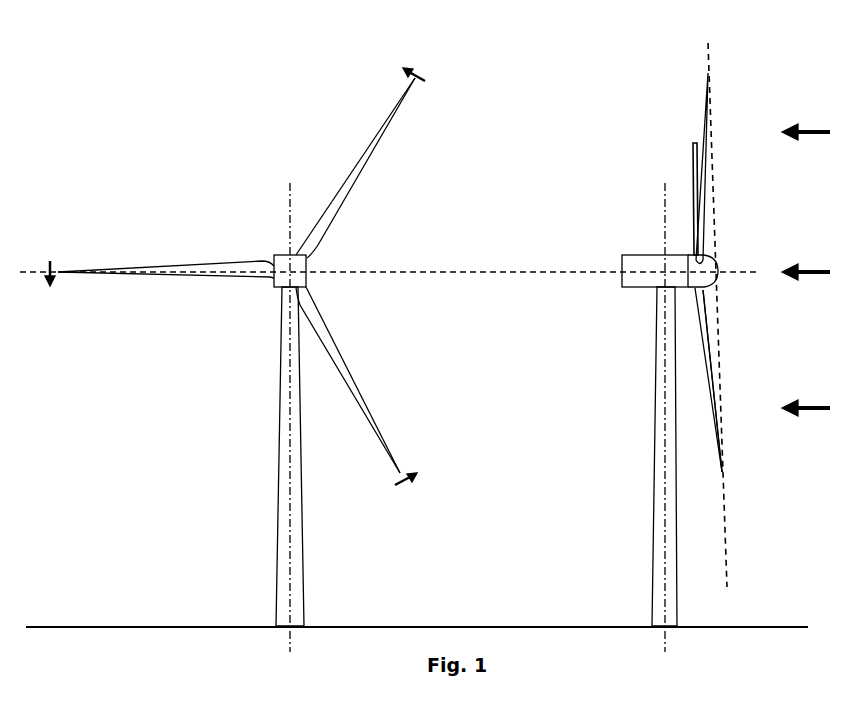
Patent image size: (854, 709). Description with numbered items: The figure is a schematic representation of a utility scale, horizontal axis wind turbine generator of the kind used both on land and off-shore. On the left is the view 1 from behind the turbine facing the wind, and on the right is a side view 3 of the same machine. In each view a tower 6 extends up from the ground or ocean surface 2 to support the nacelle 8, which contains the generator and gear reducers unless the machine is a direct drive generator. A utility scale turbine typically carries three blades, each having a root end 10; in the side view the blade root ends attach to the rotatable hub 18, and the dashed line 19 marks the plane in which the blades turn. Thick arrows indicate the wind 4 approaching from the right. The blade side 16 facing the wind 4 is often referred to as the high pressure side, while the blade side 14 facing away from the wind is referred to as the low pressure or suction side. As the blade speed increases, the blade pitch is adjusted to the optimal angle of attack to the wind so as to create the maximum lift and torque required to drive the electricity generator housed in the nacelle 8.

The view from behind the turbine 1 is at (210, 162).
The ground or ocean surface 2 is at (165, 625).
The wind turbine with tilted rotor 3 is at (604, 172).
The wind 4 is at (820, 135).
The tower 6 is at (283, 443).
The nacelle 8 is at (281, 260).
The root ends 10 is at (273, 277).
The blade side facing away from the wind 14 is at (330, 348).
The blade side facing the wind 16 is at (710, 345).
The rotatable hub 18 is at (715, 263).
The rotor plane 19 is at (727, 530).